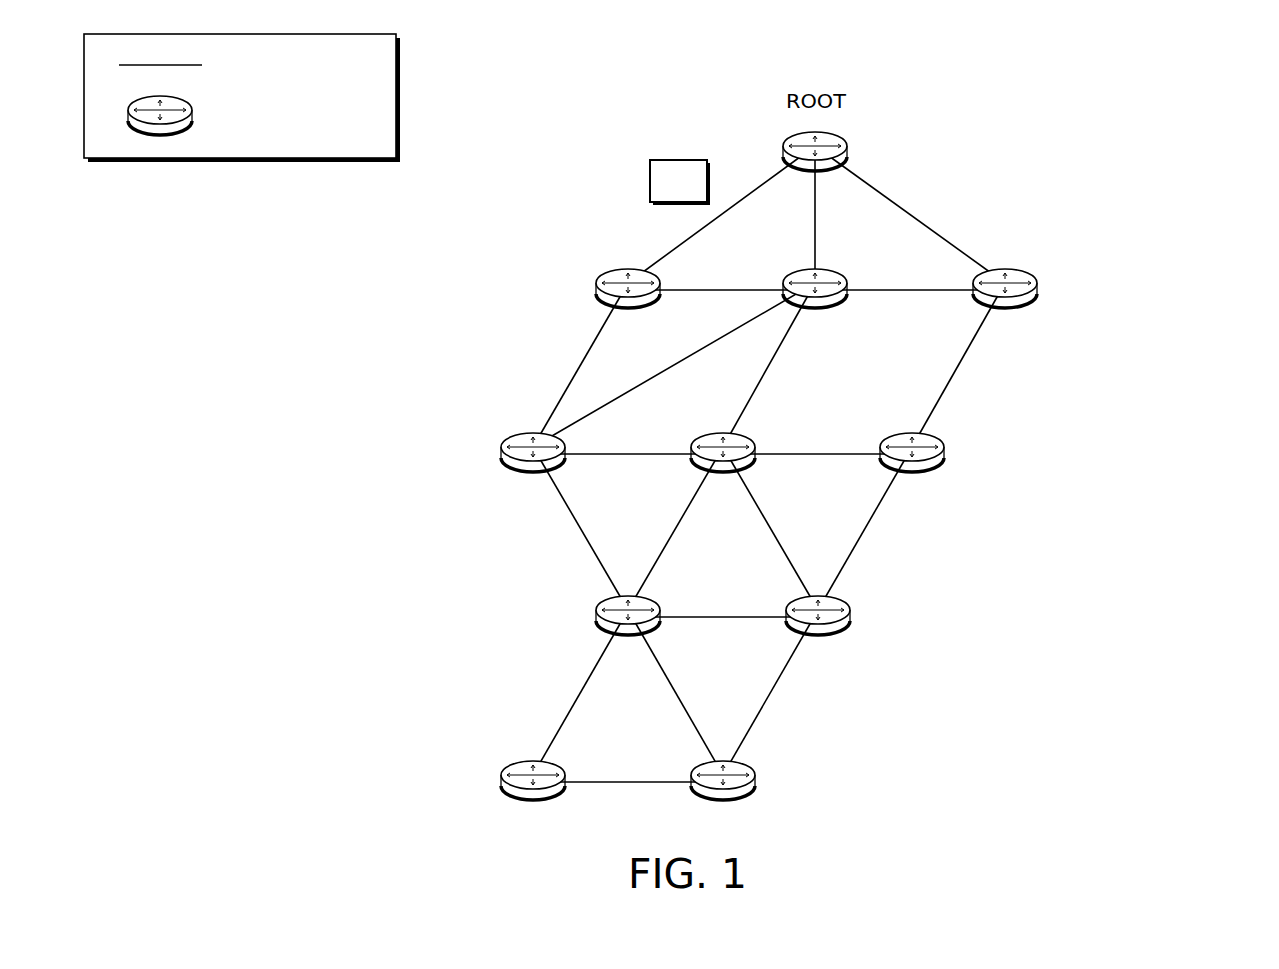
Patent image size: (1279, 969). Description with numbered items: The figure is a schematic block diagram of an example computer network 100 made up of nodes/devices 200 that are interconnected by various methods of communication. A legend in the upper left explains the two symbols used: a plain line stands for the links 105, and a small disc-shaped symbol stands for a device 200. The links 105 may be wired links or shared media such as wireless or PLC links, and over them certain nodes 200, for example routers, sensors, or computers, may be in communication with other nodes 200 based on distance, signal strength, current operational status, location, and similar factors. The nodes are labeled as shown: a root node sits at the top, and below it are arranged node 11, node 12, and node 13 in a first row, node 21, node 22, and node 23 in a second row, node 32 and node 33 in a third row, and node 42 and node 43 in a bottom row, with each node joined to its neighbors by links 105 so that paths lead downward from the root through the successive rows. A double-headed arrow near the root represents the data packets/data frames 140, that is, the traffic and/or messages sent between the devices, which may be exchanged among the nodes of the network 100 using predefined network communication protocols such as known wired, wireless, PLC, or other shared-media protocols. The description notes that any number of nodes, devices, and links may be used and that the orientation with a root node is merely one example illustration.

The computer network 100 is at (1187, 93).
The links 105 is at (231, 66).
The nodes/devices 200 is at (244, 115).
The data packets/data frames 140 is at (743, 151).
The node 11 is at (628, 308).
The node 12 is at (815, 308).
The node 13 is at (1005, 308).
The node 21 is at (533, 472).
The node 22 is at (723, 472).
The node 23 is at (912, 472).
The node 32 is at (628, 635).
The node 33 is at (818, 635).
The node 42 is at (533, 799).
The node 43 is at (723, 799).